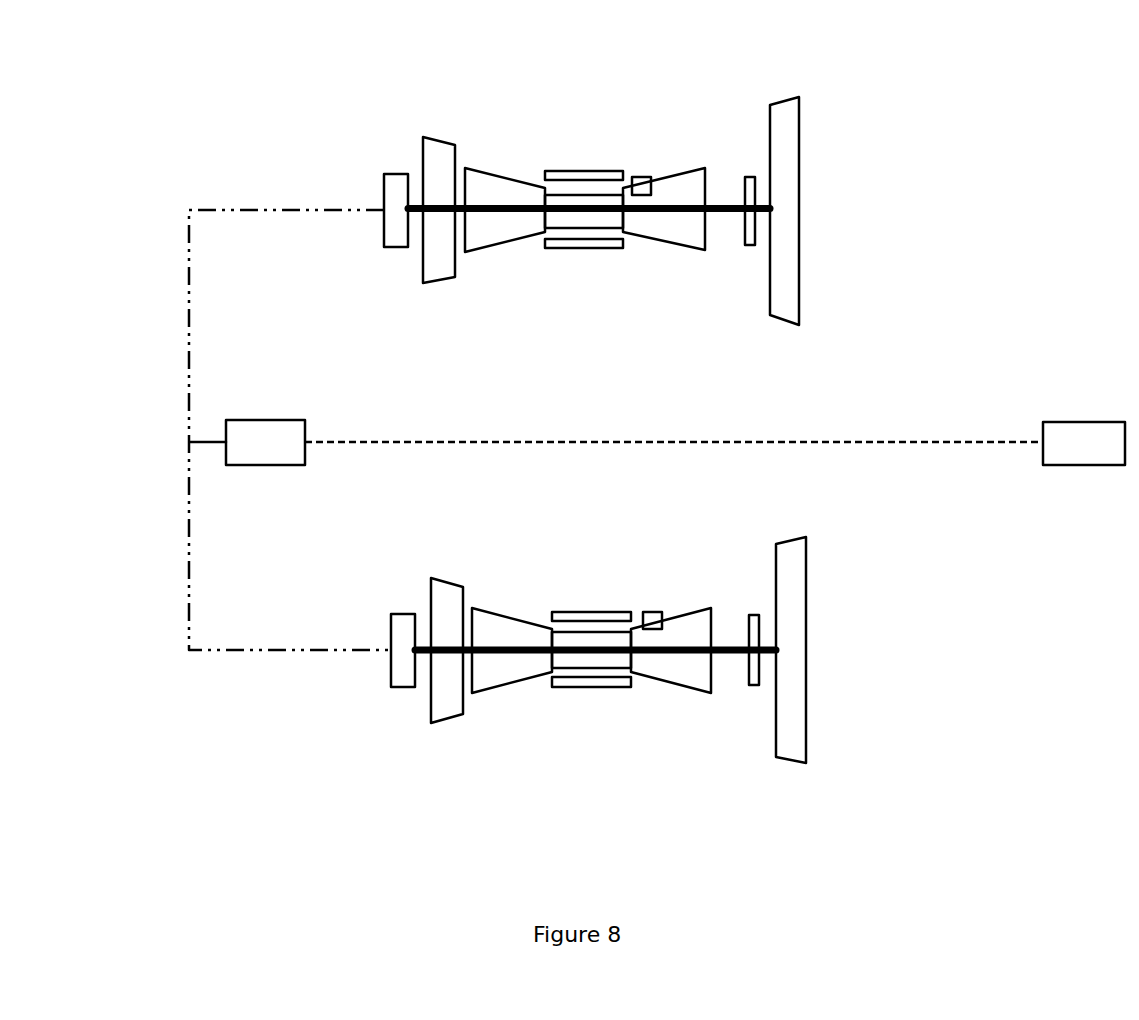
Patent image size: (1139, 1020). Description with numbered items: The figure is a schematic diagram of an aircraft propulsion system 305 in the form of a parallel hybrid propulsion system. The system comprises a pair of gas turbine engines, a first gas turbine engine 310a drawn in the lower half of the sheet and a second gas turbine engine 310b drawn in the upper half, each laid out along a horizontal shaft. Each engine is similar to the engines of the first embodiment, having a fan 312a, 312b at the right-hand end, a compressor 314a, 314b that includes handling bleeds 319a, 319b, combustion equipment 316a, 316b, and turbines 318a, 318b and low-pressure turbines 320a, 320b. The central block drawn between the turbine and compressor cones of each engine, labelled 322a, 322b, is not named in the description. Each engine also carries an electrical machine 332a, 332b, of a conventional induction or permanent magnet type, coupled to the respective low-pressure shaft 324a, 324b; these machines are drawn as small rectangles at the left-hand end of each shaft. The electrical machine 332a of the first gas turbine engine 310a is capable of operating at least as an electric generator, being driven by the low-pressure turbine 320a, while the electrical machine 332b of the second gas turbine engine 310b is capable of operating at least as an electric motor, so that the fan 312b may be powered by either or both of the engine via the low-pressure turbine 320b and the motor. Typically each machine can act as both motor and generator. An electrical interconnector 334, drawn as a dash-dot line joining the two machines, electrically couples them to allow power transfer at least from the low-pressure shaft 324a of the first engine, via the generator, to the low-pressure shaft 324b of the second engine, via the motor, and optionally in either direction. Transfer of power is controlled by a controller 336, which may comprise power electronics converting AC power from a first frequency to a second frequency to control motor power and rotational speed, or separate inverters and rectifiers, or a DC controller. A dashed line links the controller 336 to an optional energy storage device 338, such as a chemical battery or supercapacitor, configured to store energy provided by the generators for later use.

The aircraft propulsion system 305 is at (250, 585).
The first gas turbine engine 310a is at (515, 598).
The second gas turbine engine 310b is at (446, 112).
The fan 312a is at (806, 568).
The fan 312b is at (799, 133).
The compressor 314a is at (673, 683).
The compressor 314b is at (663, 168).
The combustion equipment 316a is at (613, 687).
The combustion equipment 316b is at (583, 170).
The turbine 318a is at (486, 693).
The turbine 318b is at (507, 240).
The handling bleeds 319a is at (652, 612).
The handling bleeds 319b is at (642, 177).
The low-pressure turbine 320a is at (450, 722).
The low-pressure turbine 320b is at (440, 280).
The motor-generator rotor 322a is at (557, 687).
The motor-generator rotor 322b is at (598, 230).
The low-pressure shaft 324a is at (673, 653).
The low-pressure shaft 324b is at (728, 213).
The electrical machine 332a is at (400, 688).
The electrical machine 332b is at (395, 175).
The electrical interconnector 334 is at (180, 277).
The controller 336 is at (266, 420).
The energy storage device 338 is at (1083, 422).